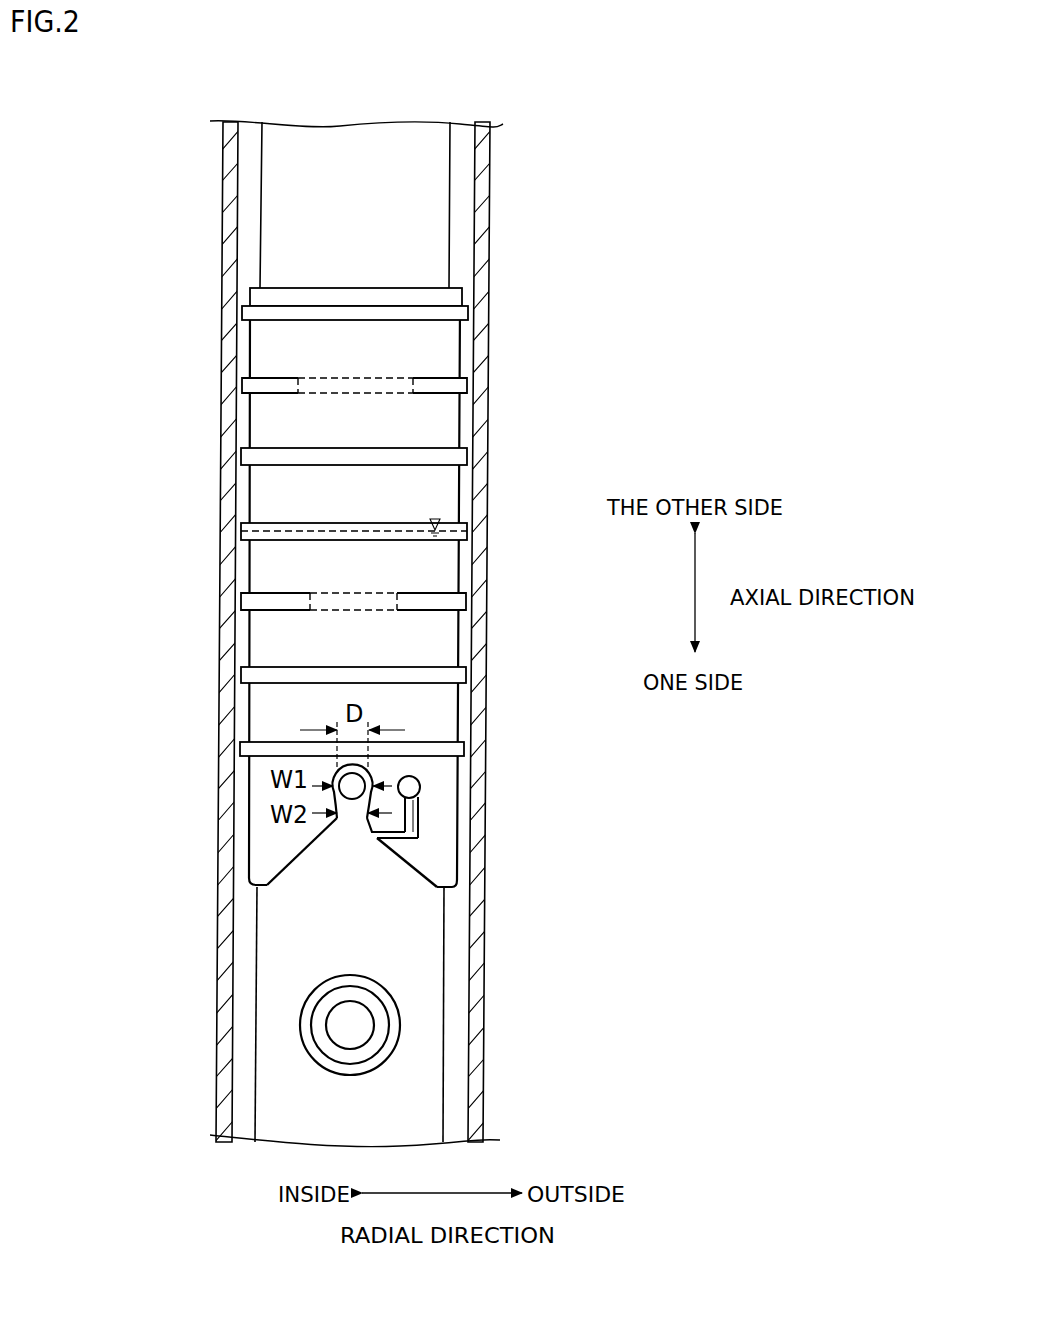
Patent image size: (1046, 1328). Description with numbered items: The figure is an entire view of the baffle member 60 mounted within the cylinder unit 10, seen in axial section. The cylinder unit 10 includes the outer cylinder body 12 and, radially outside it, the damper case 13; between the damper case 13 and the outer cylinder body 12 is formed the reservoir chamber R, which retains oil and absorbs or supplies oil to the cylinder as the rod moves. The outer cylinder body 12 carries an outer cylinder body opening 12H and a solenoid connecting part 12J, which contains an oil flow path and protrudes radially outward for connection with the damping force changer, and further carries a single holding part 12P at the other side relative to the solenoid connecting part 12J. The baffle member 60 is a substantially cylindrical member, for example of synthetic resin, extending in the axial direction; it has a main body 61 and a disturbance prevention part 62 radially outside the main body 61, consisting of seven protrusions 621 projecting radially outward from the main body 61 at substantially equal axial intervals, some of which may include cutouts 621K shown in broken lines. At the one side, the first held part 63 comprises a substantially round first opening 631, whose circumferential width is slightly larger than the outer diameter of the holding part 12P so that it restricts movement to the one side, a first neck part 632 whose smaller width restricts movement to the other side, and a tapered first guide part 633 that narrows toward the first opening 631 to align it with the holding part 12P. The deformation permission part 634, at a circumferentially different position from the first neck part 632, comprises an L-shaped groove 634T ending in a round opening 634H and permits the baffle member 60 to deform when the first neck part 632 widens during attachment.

The cylinder unit 10 is at (409, 636).
The outer cylinder body 12 is at (427, 632).
The damper case 13 is at (490, 268).
The baffle member 60 is at (377, 572).
The main body 61 is at (254, 496).
The disturbance prevention part 62 is at (346, 523).
The protrusions 621 is at (243, 312).
The cutouts 621K is at (300, 395).
The first held part 63 is at (387, 871).
The first opening 631 is at (333, 788).
The first neck part 632 is at (337, 826).
The first guide part 633 is at (303, 858).
The deformation permission part 634 is at (529, 818).
The round opening 634H is at (421, 790).
The L-shaped groove 634T is at (421, 832).
The holding part 12P is at (362, 782).
The solenoid connecting part 12J is at (300, 1036).
The outer cylinder body opening 12H is at (360, 1020).
The reservoir chamber R is at (455, 1097).